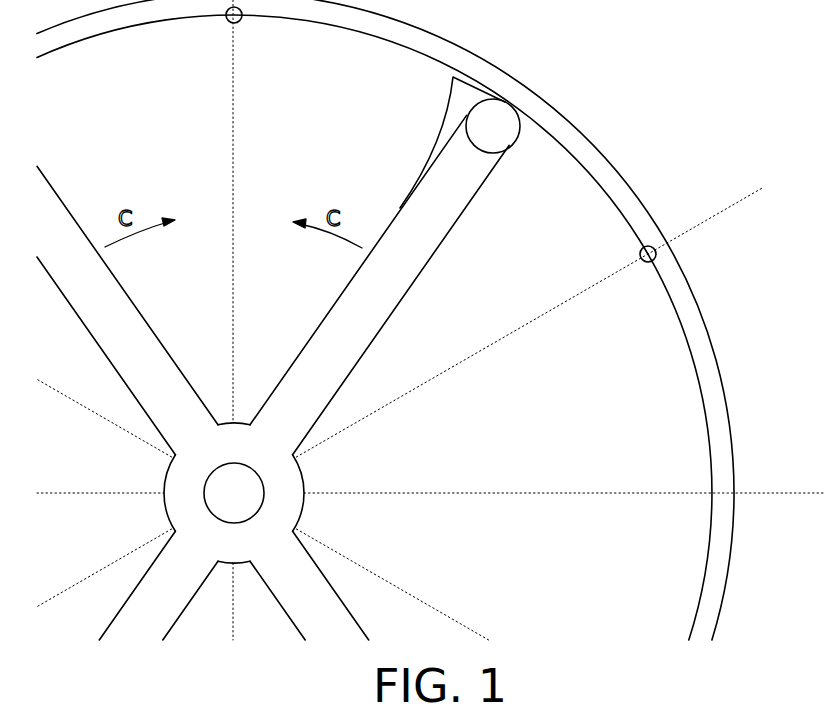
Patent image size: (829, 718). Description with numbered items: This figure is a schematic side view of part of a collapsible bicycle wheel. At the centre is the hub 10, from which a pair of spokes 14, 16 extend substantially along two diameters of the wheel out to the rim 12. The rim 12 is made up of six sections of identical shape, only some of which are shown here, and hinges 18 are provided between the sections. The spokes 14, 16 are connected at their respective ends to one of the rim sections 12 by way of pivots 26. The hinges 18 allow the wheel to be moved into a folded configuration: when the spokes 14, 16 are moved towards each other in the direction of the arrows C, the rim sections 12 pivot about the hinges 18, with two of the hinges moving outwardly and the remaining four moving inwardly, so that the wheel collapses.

The hub 10 is at (249, 489).
The rim 12 is at (597, 167).
The spoke 14 is at (127, 313).
The spoke 16 is at (433, 240).
The hinge 18 is at (240, 21).
The pivot 26 is at (504, 109).